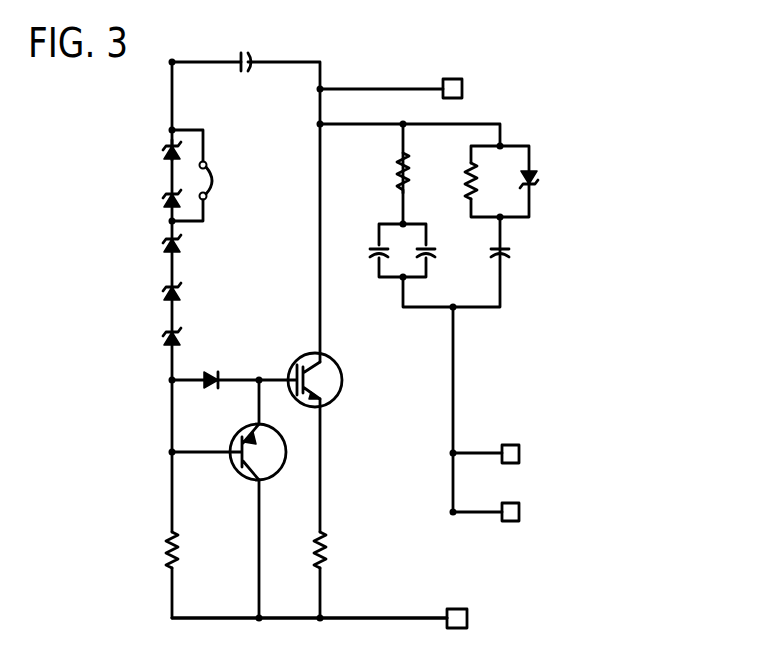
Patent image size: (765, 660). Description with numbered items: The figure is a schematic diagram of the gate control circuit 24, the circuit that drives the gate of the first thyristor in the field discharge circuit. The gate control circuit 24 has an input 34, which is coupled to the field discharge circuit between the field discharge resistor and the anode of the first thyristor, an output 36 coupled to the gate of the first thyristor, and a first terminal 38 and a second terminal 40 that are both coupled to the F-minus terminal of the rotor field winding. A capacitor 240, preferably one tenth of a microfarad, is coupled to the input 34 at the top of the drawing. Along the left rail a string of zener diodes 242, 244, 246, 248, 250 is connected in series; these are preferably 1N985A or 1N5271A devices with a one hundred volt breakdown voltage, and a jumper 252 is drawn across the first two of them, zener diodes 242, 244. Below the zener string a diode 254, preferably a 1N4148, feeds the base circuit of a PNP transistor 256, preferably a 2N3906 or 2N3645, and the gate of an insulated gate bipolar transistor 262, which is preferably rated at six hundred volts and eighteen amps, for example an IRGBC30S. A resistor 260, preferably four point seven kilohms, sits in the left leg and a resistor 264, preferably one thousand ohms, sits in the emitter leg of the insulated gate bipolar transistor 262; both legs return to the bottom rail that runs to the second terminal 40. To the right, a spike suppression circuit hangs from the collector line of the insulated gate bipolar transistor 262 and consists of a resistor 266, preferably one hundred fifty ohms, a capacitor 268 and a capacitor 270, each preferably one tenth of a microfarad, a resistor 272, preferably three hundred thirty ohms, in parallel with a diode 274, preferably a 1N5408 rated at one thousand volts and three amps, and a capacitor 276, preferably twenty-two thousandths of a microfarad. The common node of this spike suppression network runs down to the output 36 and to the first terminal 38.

The gate control circuit 24 is at (150, 618).
The input 34 is at (447, 78).
The output 36 is at (507, 445).
The first terminal 38 is at (508, 503).
The second terminal 40 is at (467, 616).
The capacitor 240 is at (237, 57).
The zener diode 242 is at (163, 157).
The zener diode 244 is at (163, 204).
The zener diode 246 is at (163, 249).
The zener diode 248 is at (163, 297).
The zener diode 250 is at (163, 342).
The jumper 252 is at (215, 184).
The diode 254 is at (208, 370).
The PNP transistor 256 is at (238, 438).
The resistor 260 is at (180, 552).
The insulated gate bipolar transistor 262 is at (302, 357).
The resistor 264 is at (327, 552).
The resistor 266 is at (398, 183).
The capacitor 268 is at (376, 250).
The capacitor 270 is at (431, 255).
The resistor 272 is at (466, 185).
The diode 274 is at (540, 178).
The capacitor 276 is at (508, 252).